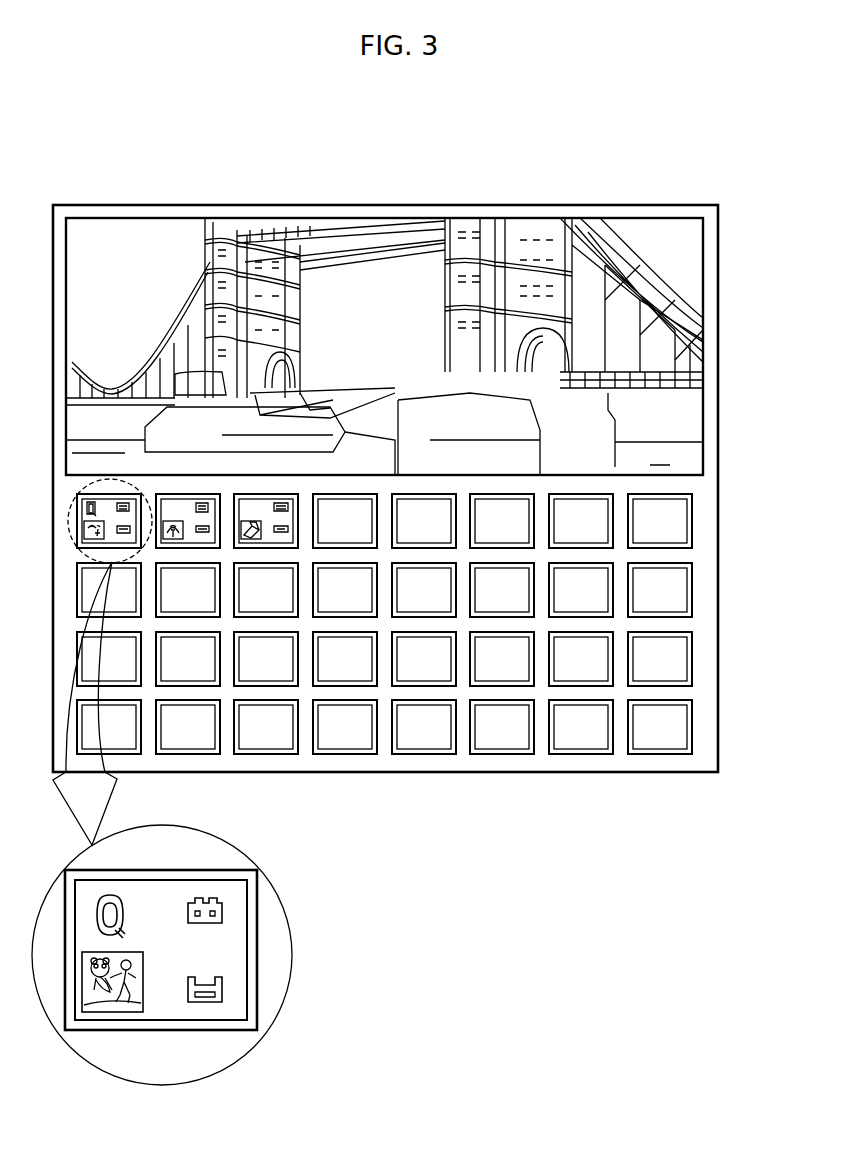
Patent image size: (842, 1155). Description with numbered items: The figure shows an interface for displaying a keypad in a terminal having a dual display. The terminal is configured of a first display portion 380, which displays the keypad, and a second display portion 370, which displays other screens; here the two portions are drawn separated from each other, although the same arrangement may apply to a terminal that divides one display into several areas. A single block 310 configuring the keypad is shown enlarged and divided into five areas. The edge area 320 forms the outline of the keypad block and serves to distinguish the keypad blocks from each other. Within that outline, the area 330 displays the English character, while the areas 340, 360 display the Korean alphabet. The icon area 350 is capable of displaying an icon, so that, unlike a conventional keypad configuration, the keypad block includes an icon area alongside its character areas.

The block 310 is at (77, 505).
The edge area 320 is at (252, 875).
The English character area 330 is at (97, 893).
The Korean alphabet area 340 is at (222, 908).
The icon area 350 is at (115, 1010).
The Korean alphabet area 360 is at (222, 985).
The second display portion 370 is at (723, 475).
The first display portion 380 is at (392, 617).